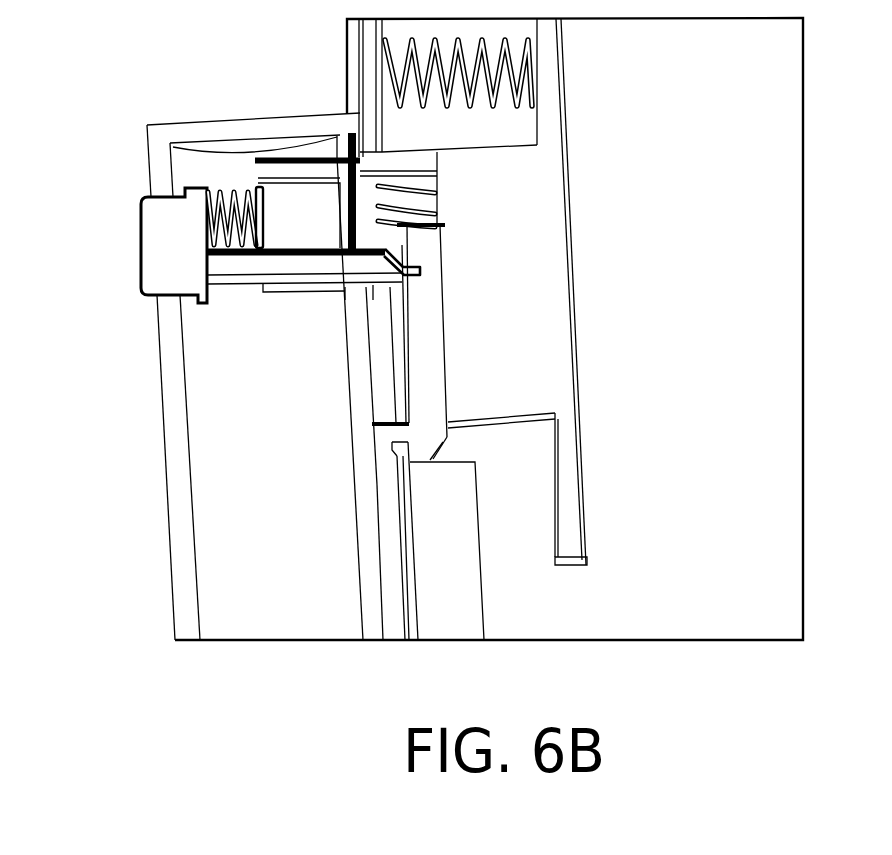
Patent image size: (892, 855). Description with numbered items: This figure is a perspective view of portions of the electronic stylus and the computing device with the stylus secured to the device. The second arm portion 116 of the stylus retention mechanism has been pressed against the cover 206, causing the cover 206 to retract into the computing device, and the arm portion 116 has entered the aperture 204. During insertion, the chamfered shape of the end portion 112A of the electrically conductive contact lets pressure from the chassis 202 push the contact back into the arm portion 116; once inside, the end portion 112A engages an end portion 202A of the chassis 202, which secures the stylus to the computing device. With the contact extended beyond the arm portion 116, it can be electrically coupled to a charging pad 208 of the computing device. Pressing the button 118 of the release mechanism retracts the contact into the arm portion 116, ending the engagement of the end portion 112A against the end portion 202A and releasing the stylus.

The button 118 is at (141, 248).
The cover 206 is at (518, 300).
The second arm portion 116 is at (397, 375).
The aperture 204 is at (372, 386).
The end portion of the chassis 202A is at (390, 428).
The end portion of the electrically conductive contact 112A is at (440, 450).
The charging pad 208 is at (483, 538).
The chassis 202 is at (388, 575).